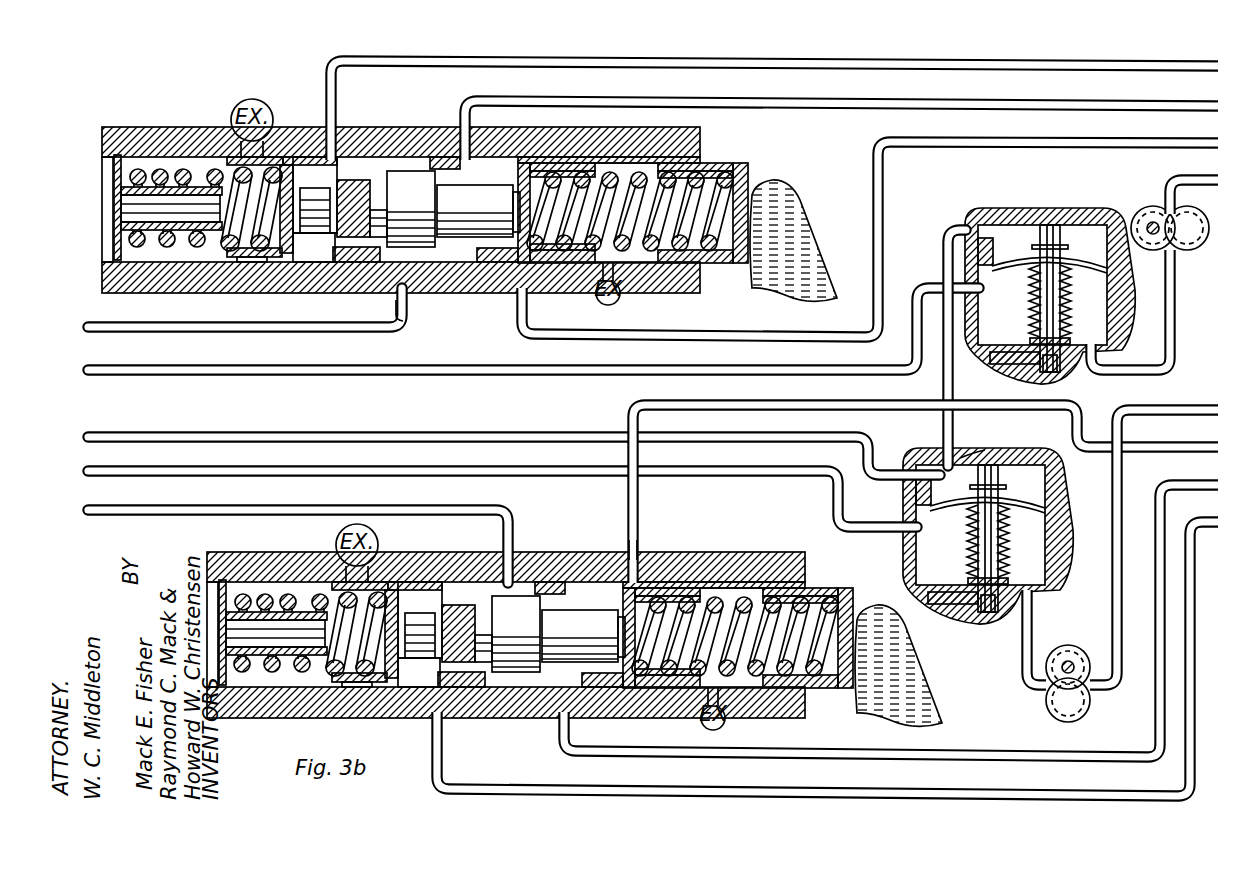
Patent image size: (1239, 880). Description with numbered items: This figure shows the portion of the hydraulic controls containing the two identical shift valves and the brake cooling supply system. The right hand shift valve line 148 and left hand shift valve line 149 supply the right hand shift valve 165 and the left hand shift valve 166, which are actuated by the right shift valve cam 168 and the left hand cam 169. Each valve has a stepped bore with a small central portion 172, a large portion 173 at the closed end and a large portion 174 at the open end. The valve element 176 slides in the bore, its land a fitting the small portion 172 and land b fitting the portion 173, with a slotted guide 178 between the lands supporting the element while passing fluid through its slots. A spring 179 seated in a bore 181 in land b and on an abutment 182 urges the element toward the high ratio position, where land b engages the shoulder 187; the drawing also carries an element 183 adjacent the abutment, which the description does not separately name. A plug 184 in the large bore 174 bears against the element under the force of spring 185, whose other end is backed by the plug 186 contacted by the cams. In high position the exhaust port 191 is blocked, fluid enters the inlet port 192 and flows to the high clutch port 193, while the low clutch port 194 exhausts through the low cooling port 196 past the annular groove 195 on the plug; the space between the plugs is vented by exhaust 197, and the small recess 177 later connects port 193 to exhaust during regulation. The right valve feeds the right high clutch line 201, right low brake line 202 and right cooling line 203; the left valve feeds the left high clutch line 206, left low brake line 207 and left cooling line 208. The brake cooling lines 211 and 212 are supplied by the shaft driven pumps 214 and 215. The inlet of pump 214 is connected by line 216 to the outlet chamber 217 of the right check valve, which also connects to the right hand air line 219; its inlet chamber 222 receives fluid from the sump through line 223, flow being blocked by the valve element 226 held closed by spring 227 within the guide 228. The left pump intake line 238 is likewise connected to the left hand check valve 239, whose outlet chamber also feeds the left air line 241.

The right hand shift valve line 148 is at (397, 310).
The left hand shift valve line 149 is at (92, 510).
The right hand shift valve 165 is at (428, 325).
The left hand shift valve 166 is at (628, 548).
The right shift valve cam 168 is at (822, 179).
The left hand cam 169 is at (882, 716).
The small central portion of stepped bore 172 is at (352, 180).
The large portion of bore at closed end 173 is at (238, 165).
The large portion of bore at open end 174 is at (612, 172).
The valve element 176 is at (470, 228).
The small recess 177 is at (498, 150).
The slotted guide 178 is at (316, 203).
The spring 179 is at (150, 168).
The bore 181 is at (240, 262).
The abutment 182 is at (117, 192).
The piston rod 183 is at (125, 208).
The plug 184 is at (580, 180).
The spring 185 is at (666, 176).
The plug 186 is at (745, 166).
The shoulder 187 is at (312, 262).
The exhaust port 191 is at (253, 99).
The inlet port 192 is at (405, 171).
The high clutch port 193 is at (308, 157).
The low clutch port 194 is at (446, 157).
The annular groove 195 is at (508, 293).
The low cooling port 196 is at (537, 290).
The exhaust 197 is at (620, 299).
The right high clutch line 201 is at (338, 74).
The right low brake line 202 is at (484, 101).
The right cooling line 203 is at (530, 339).
The left high clutch line 206 is at (1200, 522).
The left low brake line 207 is at (1200, 485).
The left cooling line 208 is at (1200, 447).
The right hand brake cooling line 211 is at (1205, 180).
The left hand brake cooling line 212 is at (1200, 410).
The pump 214 is at (1186, 252).
The pump 215 is at (1080, 712).
The line 216 is at (1172, 368).
The outlet chamber 217 is at (992, 370).
The right hand air line 219 is at (92, 375).
The inlet chamber 222 is at (1012, 222).
The line 223 is at (92, 437).
The valve element 226 is at (1013, 270).
The spring 227 is at (1062, 320).
The guide 228 is at (1058, 208).
The intake line 238 is at (1022, 675).
The left hand check valve 239 is at (984, 450).
The left air line 241 is at (92, 471).